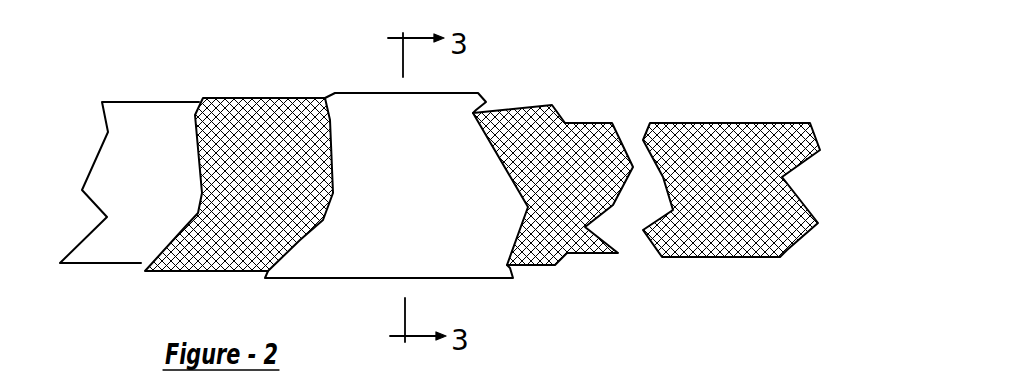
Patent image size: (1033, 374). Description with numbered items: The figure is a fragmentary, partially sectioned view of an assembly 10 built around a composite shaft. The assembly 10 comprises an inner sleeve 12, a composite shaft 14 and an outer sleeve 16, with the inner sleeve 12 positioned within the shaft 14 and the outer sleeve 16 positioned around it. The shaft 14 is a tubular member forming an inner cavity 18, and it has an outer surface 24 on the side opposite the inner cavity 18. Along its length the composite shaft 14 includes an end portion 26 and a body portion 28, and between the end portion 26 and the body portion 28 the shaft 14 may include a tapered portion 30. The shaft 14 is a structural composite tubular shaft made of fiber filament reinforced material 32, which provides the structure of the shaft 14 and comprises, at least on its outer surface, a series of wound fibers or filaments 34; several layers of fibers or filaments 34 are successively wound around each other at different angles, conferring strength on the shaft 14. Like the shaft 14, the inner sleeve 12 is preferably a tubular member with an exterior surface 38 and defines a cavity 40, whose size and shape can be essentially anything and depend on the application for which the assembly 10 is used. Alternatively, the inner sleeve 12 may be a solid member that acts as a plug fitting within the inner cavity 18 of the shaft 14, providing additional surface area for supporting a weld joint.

The assembly 10 is at (258, 50).
The inner sleeve 12 is at (103, 252).
The composite shaft 14 is at (237, 268).
The outer sleeve 16 is at (345, 258).
The inner cavity 18 is at (187, 220).
The outer surface 24 is at (282, 190).
The end portion 26 is at (228, 102).
The body portion 28 is at (708, 123).
The tapered portion 30 is at (558, 115).
The fiber filament reinforced material 32 is at (302, 98).
The wound fibers or filaments 34 is at (527, 265).
The exterior surface 38 is at (148, 193).
The cavity 40 is at (97, 157).